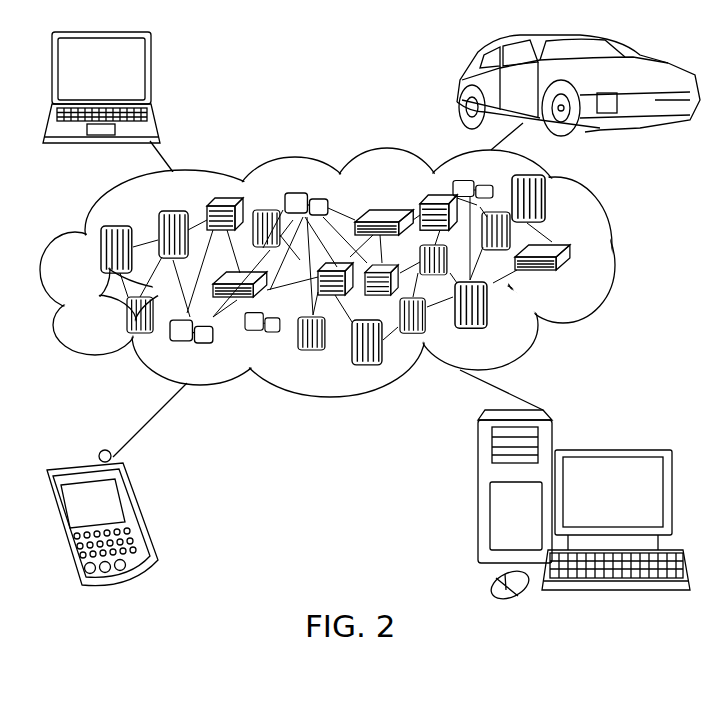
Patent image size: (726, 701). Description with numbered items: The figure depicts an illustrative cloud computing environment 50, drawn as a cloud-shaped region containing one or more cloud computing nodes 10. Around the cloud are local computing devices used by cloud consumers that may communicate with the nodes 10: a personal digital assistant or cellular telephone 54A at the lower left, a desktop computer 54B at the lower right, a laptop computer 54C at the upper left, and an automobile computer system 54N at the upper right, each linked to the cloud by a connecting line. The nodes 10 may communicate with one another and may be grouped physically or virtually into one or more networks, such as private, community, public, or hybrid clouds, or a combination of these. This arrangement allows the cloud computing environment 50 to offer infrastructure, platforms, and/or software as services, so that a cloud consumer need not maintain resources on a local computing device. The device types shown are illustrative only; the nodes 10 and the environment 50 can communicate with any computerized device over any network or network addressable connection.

The cloud computing node 10 is at (578, 279).
The cloud computing environment 50 is at (347, 272).
The personal digital assistant (PDA) or cellular telephone 54A is at (140, 515).
The desktop computer 54B is at (623, 437).
The laptop computer 54C is at (150, 73).
The automobile computer system 54N is at (457, 85).